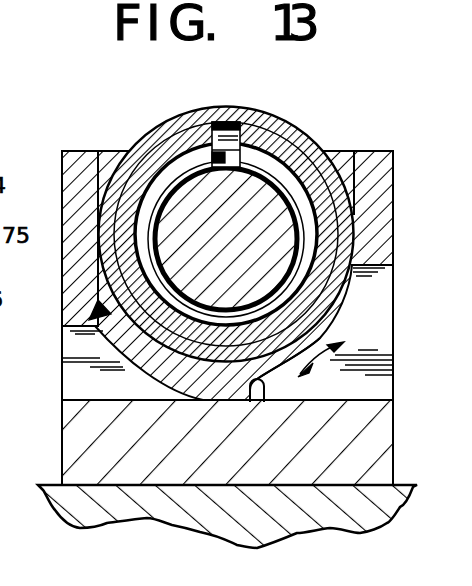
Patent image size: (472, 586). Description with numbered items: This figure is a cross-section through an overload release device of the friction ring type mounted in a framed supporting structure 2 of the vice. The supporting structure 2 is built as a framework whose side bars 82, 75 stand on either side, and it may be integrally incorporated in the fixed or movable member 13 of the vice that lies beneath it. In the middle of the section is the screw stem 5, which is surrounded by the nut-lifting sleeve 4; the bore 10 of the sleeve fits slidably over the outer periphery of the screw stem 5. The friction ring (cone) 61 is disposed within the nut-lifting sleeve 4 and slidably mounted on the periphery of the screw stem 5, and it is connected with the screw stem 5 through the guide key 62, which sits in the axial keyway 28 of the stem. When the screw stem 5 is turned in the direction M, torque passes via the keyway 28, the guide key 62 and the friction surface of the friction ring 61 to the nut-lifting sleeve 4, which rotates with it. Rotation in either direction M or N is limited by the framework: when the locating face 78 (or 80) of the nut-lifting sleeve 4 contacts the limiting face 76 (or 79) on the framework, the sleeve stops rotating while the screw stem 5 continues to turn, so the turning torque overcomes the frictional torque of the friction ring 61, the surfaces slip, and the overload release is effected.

The supporting structure 2 is at (63, 400).
The nut-lifting sleeve 4 is at (303, 140).
The screw stem 5 is at (232, 278).
The bore 10 is at (200, 152).
The fixed (or movable) member of the vice 13 is at (172, 512).
The axial keyway 28 is at (214, 168).
The friction ring (cone) 61 is at (268, 137).
The guide key 62 is at (223, 127).
The side bar 75 is at (368, 165).
The limiting face 76 is at (383, 266).
The locating face 78 is at (262, 402).
The limiting face 79 is at (78, 342).
The locating face 80 is at (88, 318).
The side bar 82 is at (72, 152).
The direction M is at (307, 369).
The direction N is at (341, 335).